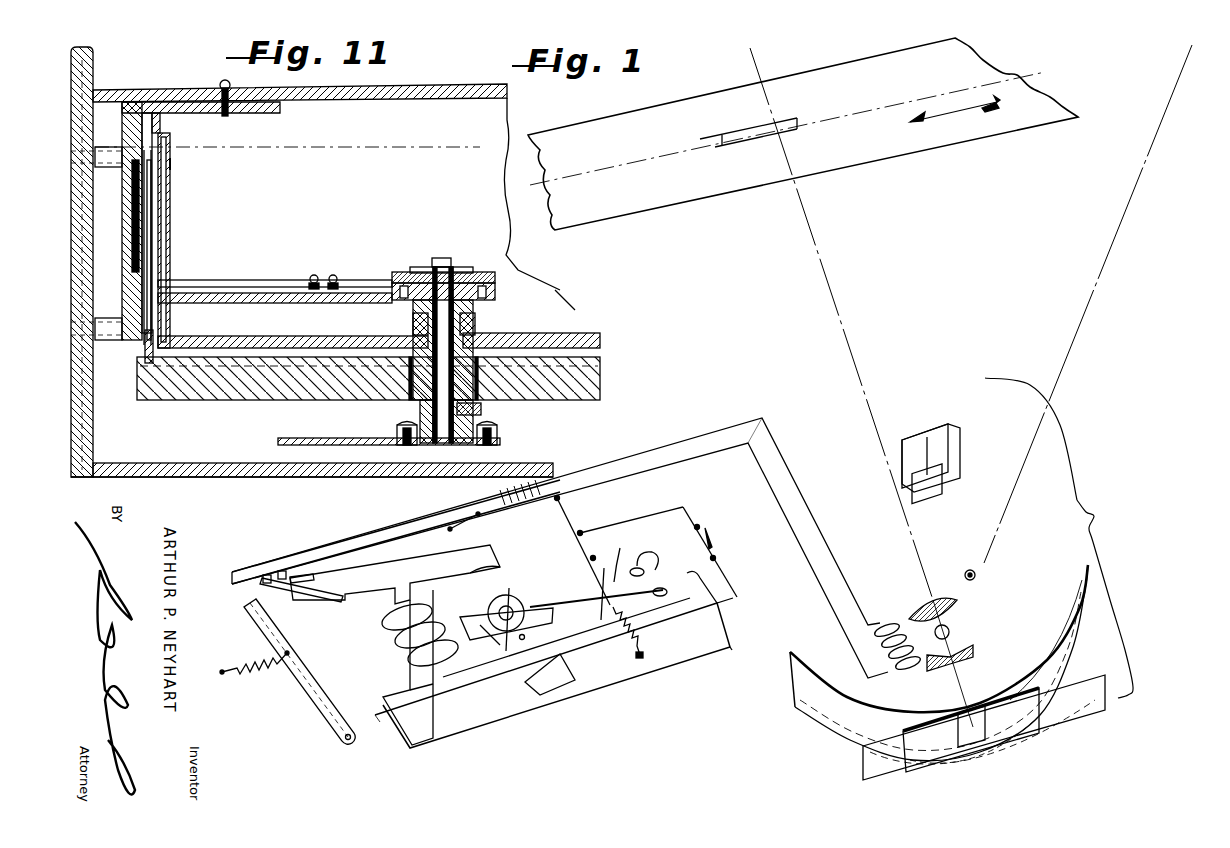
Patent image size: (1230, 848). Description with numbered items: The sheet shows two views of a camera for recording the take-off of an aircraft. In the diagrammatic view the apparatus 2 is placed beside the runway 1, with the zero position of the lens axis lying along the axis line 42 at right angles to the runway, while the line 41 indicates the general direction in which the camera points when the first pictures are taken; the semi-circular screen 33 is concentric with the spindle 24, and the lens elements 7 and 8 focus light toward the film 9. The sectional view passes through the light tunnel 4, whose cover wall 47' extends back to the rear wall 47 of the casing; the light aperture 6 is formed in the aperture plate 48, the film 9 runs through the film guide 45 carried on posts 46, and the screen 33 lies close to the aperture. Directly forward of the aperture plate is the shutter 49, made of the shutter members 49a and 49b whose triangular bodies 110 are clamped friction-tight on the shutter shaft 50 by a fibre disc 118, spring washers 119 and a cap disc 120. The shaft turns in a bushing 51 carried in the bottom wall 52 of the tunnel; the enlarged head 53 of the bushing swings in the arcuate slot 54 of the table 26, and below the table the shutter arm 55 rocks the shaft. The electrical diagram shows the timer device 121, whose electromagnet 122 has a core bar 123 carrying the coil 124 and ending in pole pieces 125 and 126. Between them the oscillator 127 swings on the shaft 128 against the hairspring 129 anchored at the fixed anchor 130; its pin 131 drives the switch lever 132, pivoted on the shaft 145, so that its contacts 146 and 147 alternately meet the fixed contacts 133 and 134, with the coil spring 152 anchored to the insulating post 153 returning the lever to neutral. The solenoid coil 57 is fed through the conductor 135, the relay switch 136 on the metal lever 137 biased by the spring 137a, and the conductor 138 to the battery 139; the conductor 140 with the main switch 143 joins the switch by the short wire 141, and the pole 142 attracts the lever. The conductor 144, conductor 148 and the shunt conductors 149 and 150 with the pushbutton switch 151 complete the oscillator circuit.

In FIG. 1, the runway 1 is at (832, 72).
In FIG. 1, the assembly of parts (apparatus) 2 is at (961, 630).
In FIG. 11, the light tunnel 4 is at (556, 292).
In FIG. 11, the light aperture 6 is at (156, 181).
In FIG. 1, the light aperture 6 is at (1005, 735).
In FIG. 1, the lens element 7 is at (944, 602).
In FIG. 1, the lens element 8 is at (974, 654).
In FIG. 11, the light-sensitive film 9 is at (155, 248).
In FIG. 1, the light-sensitive film 9 is at (883, 766).
In FIG. 1, the central spindle 24 is at (950, 630).
In FIG. 11, the table 26 is at (246, 400).
In FIG. 11, the screen 33 is at (145, 345).
In FIG. 1, the screen 33 is at (1078, 638).
In FIG. 1, the line 41 is at (1068, 378).
In FIG. 1, the axis line 42 is at (866, 392).
In FIG. 11, the film guide 45 is at (126, 284).
In FIG. 11, the posts or bolts 46 is at (112, 147).
In FIG. 11, the rear wall 47 is at (68, 262).
In FIG. 11, the cover wall 47' is at (300, 105).
In FIG. 11, the aperture plate 48 is at (162, 124).
In FIG. 11, the shutter 49 is at (172, 222).
In FIG. 11, the shutter member 49a is at (173, 163).
In FIG. 11, the shutter member 49b is at (240, 303).
In FIG. 11, the shutter shaft 50 is at (476, 322).
In FIG. 11, the bushing 51 is at (412, 322).
In FIG. 11, the bottom wall 52 is at (532, 332).
In FIG. 11, the enlarged head 53 is at (478, 385).
In FIG. 11, the arcuate slot 54 is at (408, 380).
In FIG. 11, the shutter arm 55 is at (312, 437).
In FIG. 1, the coil 57 is at (888, 622).
In FIG. 11, the triangularly formed bodies 110 is at (290, 281).
In FIG. 11, the spacer or disc 118 is at (497, 290).
In FIG. 11, the spring washers 119 is at (480, 272).
In FIG. 11, the head or cap disc 120 is at (452, 262).
In FIG. 1, the timer device 121 is at (497, 667).
In FIG. 1, the electromagnet 122 is at (457, 712).
In FIG. 1, the core bar 123 is at (395, 640).
In FIG. 1, the electric coil 124 is at (430, 612).
In FIG. 1, the pole piece 125 is at (495, 555).
In FIG. 1, the pole piece 126 is at (568, 662).
In FIG. 1, the oscillator 127 is at (545, 625).
In FIG. 1, the pivot pin or shaft 128 is at (512, 592).
In FIG. 1, the hairspring 129 is at (481, 644).
In FIG. 1, the fixed anchor 130 is at (523, 640).
In FIG. 1, the pin 131 is at (535, 603).
In FIG. 1, the switch lever 132 is at (620, 555).
In FIG. 1, the fixed contact 133 is at (652, 552).
In FIG. 1, the fixed contact 134 is at (663, 598).
In FIG. 1, the conductor 135 is at (446, 510).
In FIG. 1, the relay switch 136 is at (262, 590).
In FIG. 1, the metal lever 137 is at (300, 700).
In FIG. 1, the spring 137a is at (252, 675).
In FIG. 1, the conductor 138 is at (660, 472).
In FIG. 1, the battery 139 is at (503, 493).
In FIG. 1, the conductor 140 is at (420, 546).
In FIG. 1, the short wire 141 is at (302, 574).
In FIG. 1, the rearwardly extending pole 142 is at (310, 603).
In FIG. 1, the main switch 143 is at (470, 522).
In FIG. 1, the conductor 144 is at (575, 520).
In FIG. 1, the pivot pin or shaft 145 is at (601, 614).
In FIG. 1, the contact 146 is at (645, 570).
In FIG. 1, the contact 147 is at (713, 604).
In FIG. 1, the conductor 148 is at (712, 662).
In FIG. 1, the shunt conductor 149 is at (698, 525).
In FIG. 1, the shunt conductor 150 is at (730, 588).
In FIG. 1, the pushbutton switch 151 is at (715, 548).
In FIG. 1, the coil spring 152 is at (630, 626).
In FIG. 1, the insulating post 153 is at (644, 656).